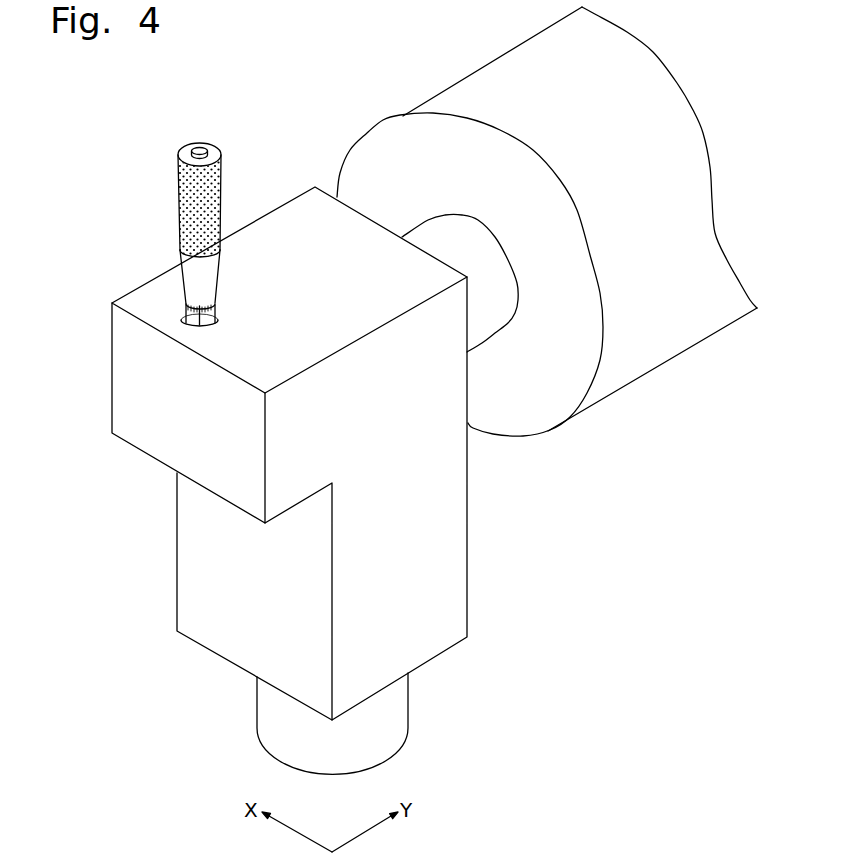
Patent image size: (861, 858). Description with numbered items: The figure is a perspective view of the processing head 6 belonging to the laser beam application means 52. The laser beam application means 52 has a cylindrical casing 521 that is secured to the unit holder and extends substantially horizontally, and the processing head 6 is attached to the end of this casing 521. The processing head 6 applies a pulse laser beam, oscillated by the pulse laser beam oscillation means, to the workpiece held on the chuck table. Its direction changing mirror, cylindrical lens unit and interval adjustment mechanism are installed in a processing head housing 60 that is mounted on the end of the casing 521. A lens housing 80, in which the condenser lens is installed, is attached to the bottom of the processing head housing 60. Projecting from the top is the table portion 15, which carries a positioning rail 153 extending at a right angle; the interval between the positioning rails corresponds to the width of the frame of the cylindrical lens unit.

The processing head 6 is at (264, 159).
The processing head housing 60 is at (295, 189).
The table portion 15 is at (154, 234).
The positioning rail 153 is at (178, 184).
The lens housing 80 is at (270, 718).
The laser beam application means 52 is at (547, 222).
The cylindrical casing 521 is at (625, 372).